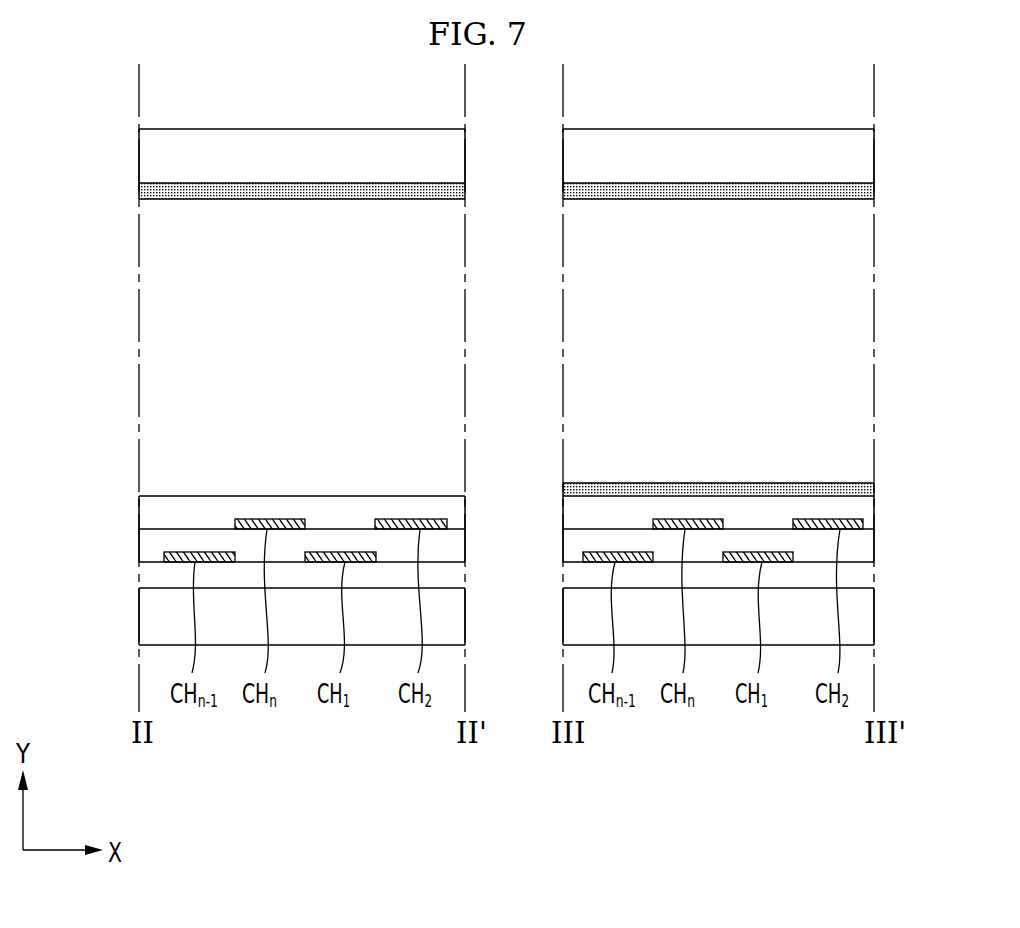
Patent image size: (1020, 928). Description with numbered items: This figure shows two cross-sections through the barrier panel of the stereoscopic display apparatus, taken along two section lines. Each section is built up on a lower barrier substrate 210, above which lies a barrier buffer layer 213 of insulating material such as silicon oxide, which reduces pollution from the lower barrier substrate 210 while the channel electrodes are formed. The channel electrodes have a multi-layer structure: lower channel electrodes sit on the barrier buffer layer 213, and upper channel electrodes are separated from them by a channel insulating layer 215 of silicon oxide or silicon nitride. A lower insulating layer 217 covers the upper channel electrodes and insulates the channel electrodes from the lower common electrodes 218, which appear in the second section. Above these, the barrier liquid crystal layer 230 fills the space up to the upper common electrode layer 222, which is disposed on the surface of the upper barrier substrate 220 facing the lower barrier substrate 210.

The lower barrier substrate 210 is at (150, 615).
The barrier buffer layer 213 is at (150, 575).
The channel insulating layer 215 is at (150, 543).
The lower insulating layer 217 is at (150, 512).
The lower common electrodes 218 is at (863, 485).
The upper barrier substrate 220 is at (150, 157).
The upper common electrode layer 222 is at (150, 190).
The barrier liquid crystal layer 230 is at (863, 362).